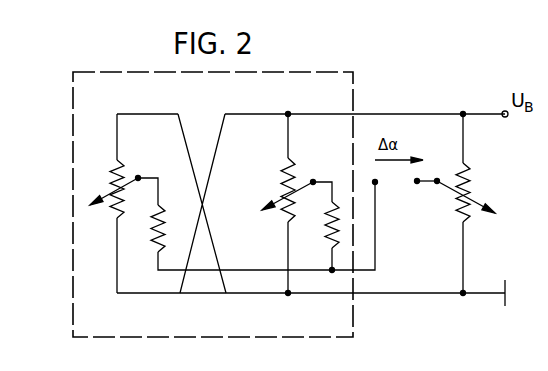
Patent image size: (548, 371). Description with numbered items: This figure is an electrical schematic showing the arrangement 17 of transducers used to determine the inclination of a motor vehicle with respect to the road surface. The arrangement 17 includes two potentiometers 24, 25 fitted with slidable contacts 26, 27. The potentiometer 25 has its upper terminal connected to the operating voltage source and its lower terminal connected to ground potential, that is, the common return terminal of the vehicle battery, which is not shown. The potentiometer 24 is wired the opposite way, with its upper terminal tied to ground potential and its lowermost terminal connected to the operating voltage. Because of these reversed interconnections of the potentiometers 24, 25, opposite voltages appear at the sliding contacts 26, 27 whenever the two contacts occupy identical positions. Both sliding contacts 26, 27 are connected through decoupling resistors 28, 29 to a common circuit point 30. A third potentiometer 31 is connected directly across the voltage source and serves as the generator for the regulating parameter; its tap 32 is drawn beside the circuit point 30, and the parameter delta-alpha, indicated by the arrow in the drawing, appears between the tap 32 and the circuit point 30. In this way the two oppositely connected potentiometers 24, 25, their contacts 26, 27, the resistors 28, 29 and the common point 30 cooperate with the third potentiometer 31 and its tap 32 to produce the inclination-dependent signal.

The arrangement 17 is at (338, 95).
The potentiometer 24 is at (107, 178).
The potentiometer 25 is at (278, 174).
The slidable contact 26 is at (138, 178).
The slidable contact 27 is at (313, 182).
The decoupling resistor 28 is at (154, 232).
The decoupling resistor 29 is at (329, 228).
The common circuit point 30 is at (375, 182).
The third potentiometer 31 is at (472, 181).
The tap 32 is at (437, 181).